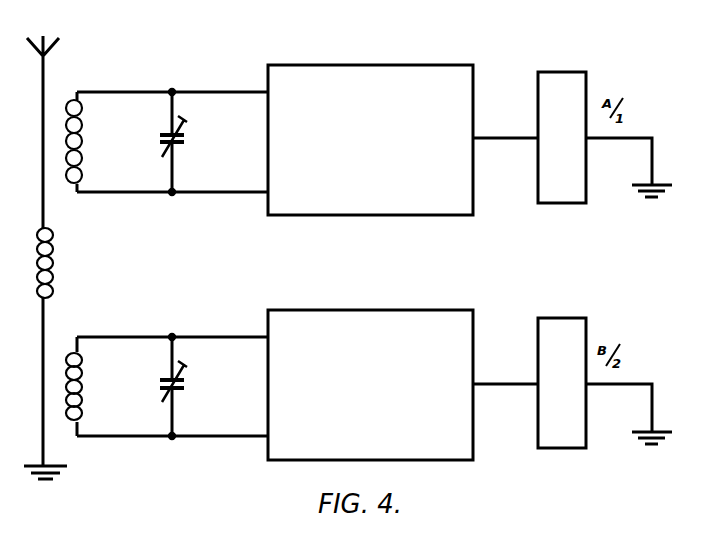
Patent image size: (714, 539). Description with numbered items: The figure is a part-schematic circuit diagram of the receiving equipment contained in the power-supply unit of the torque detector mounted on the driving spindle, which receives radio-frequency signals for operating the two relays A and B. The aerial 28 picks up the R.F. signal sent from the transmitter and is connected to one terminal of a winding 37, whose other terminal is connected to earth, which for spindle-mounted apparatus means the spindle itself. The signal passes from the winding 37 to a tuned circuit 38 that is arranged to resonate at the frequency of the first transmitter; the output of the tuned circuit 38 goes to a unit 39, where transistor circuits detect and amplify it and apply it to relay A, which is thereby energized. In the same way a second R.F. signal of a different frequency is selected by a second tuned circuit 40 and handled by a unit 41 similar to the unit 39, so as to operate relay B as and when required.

The aerial 28 is at (44, 68).
The winding 37 is at (53, 268).
The tuned circuit 38 is at (128, 157).
The unit 39 is at (373, 154).
The second tuned circuit 40 is at (124, 402).
The unit 41 is at (373, 400).